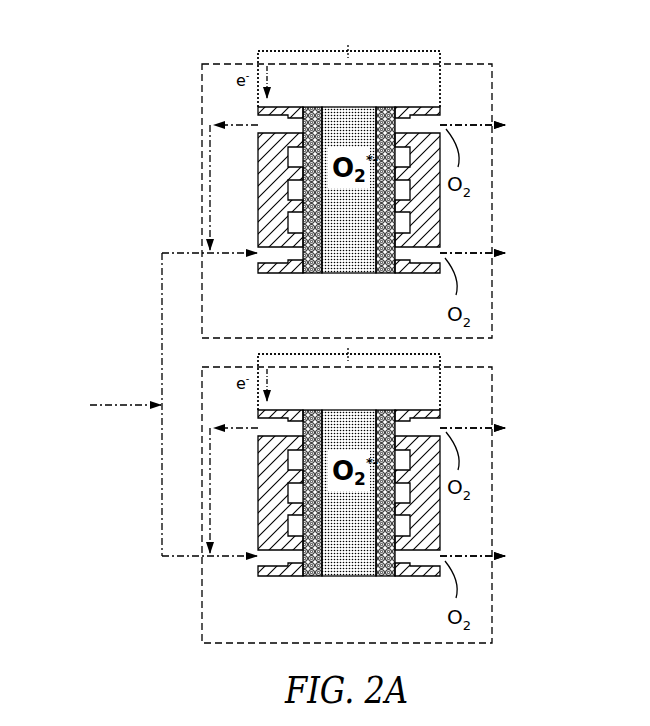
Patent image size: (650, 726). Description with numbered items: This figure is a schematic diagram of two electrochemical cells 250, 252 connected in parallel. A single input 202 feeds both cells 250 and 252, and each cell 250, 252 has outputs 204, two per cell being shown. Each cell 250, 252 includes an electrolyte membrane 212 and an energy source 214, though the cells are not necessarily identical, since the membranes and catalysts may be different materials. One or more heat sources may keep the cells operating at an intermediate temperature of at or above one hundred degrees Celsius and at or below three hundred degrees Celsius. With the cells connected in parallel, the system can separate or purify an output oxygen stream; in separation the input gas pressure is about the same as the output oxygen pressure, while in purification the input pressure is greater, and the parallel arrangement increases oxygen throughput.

The input 202 is at (120, 410).
The output 204 is at (483, 112).
The electrolyte membrane 212 is at (350, 114).
The energy source 214 is at (257, 63).
The electrochemical cell 250 is at (201, 116).
The electrochemical cell 252 is at (201, 606).